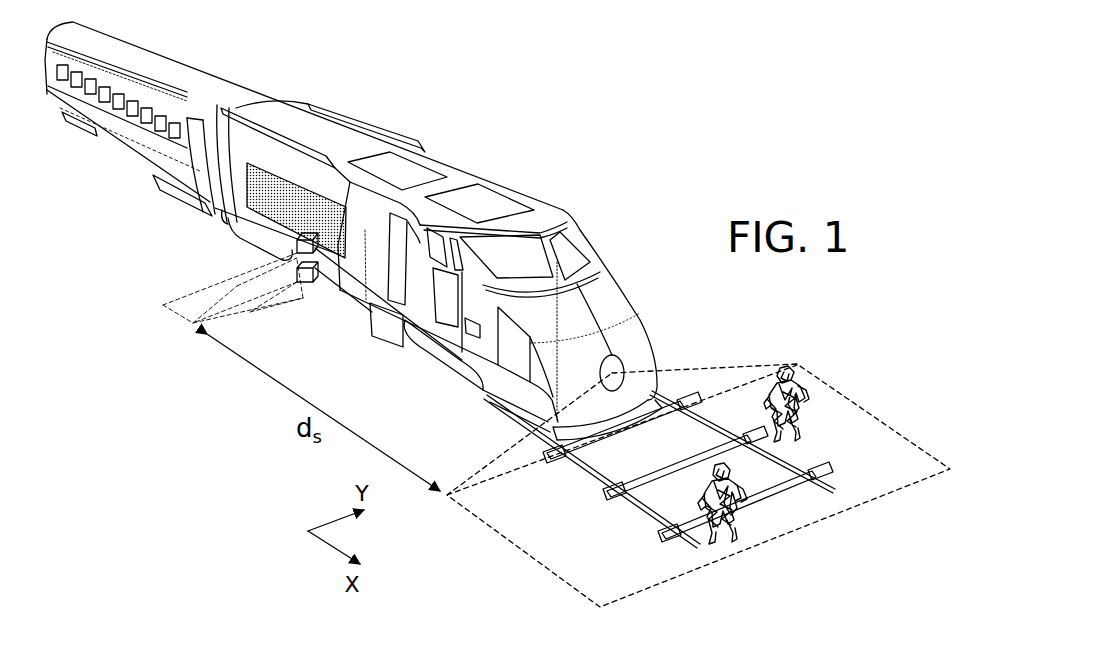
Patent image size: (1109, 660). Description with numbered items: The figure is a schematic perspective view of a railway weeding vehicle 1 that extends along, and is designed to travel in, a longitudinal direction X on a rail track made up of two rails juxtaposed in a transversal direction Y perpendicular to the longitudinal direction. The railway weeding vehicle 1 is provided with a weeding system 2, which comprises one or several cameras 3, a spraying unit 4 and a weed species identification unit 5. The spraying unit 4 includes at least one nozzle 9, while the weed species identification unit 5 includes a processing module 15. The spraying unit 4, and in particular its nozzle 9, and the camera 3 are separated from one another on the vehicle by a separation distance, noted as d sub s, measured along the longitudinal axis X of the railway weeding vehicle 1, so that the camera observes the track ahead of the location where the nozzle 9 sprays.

The railway weeding vehicle 1 is at (227, 87).
The weeding system 2 is at (590, 78).
The camera 3 is at (617, 368).
The spraying unit 4 is at (459, 128).
The weed species identification unit 5 is at (617, 193).
The nozzle 9 is at (316, 279).
The processing module 15 is at (417, 240).